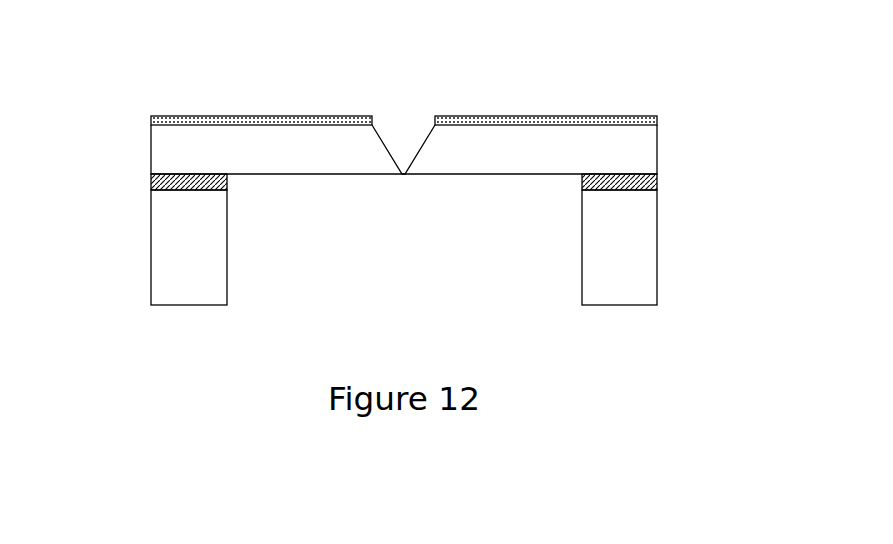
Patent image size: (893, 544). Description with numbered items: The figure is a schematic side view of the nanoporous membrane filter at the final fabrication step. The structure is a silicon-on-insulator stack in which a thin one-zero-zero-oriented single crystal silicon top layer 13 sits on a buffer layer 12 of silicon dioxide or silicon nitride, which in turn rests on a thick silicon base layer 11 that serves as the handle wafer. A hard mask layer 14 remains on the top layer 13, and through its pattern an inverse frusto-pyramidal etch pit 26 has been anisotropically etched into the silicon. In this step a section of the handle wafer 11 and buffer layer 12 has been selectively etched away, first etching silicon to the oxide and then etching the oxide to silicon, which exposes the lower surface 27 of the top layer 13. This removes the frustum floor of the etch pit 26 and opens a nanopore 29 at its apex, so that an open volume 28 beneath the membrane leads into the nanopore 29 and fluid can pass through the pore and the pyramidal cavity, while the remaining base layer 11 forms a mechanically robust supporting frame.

The silicon base layer 11 is at (151, 269).
The buffer layer 12 is at (151, 183).
The single crystal silicon top layer 13 is at (151, 140).
The hard mask layer 14 is at (657, 118).
The inverse frusto-pyramidal etch pit 26 is at (395, 117).
The lower surface 27 is at (485, 175).
The open volume 28 is at (424, 266).
The nanopore 29 is at (403, 180).